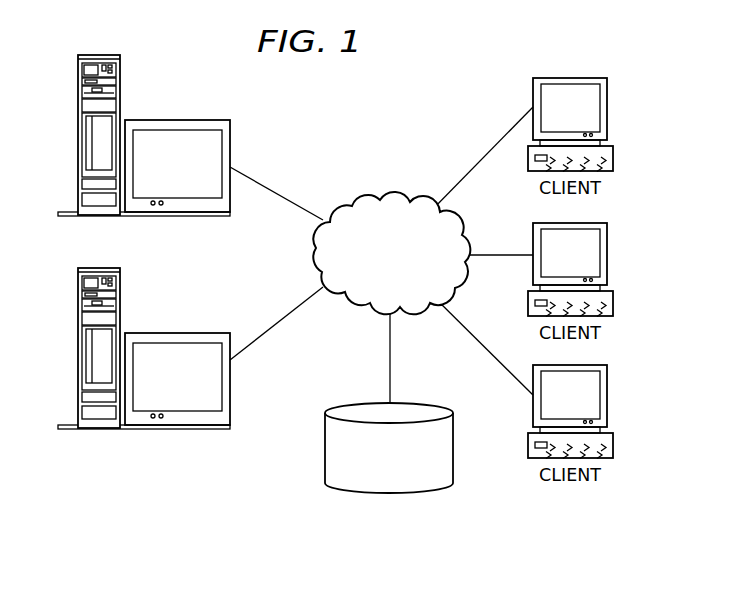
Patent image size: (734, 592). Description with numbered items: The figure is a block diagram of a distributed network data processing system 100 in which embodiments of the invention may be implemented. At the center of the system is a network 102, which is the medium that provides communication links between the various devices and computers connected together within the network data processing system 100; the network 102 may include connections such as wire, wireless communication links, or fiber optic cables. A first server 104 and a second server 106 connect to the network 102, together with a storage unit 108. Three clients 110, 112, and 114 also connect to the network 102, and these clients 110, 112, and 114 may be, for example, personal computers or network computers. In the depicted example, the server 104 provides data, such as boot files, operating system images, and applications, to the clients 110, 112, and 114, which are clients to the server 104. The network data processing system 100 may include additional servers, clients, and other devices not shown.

The network data processing system 100 is at (446, 83).
The network 102 is at (383, 200).
The server 104 is at (77, 135).
The server 106 is at (77, 355).
The storage unit 108 is at (400, 500).
The client 110 is at (607, 103).
The client 112 is at (607, 250).
The client 114 is at (607, 395).